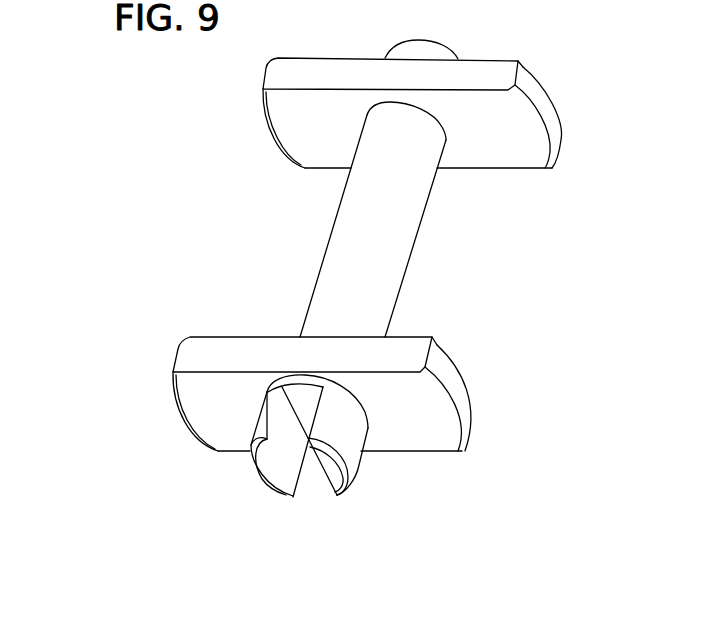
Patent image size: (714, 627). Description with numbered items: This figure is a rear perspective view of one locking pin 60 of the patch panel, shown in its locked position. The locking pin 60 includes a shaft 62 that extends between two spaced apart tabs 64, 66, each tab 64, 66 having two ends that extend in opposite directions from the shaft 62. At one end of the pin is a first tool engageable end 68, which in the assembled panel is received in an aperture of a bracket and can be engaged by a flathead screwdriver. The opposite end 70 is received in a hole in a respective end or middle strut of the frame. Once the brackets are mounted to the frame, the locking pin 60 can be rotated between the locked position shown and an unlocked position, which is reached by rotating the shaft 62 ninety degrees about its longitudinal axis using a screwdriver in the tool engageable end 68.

The locking pin 60 is at (240, 251).
The shaft 62 is at (392, 250).
The tab 64 is at (263, 88).
The tab 66 is at (461, 428).
The first tool engageable end 68 is at (294, 477).
The opposite end 70 is at (420, 50).